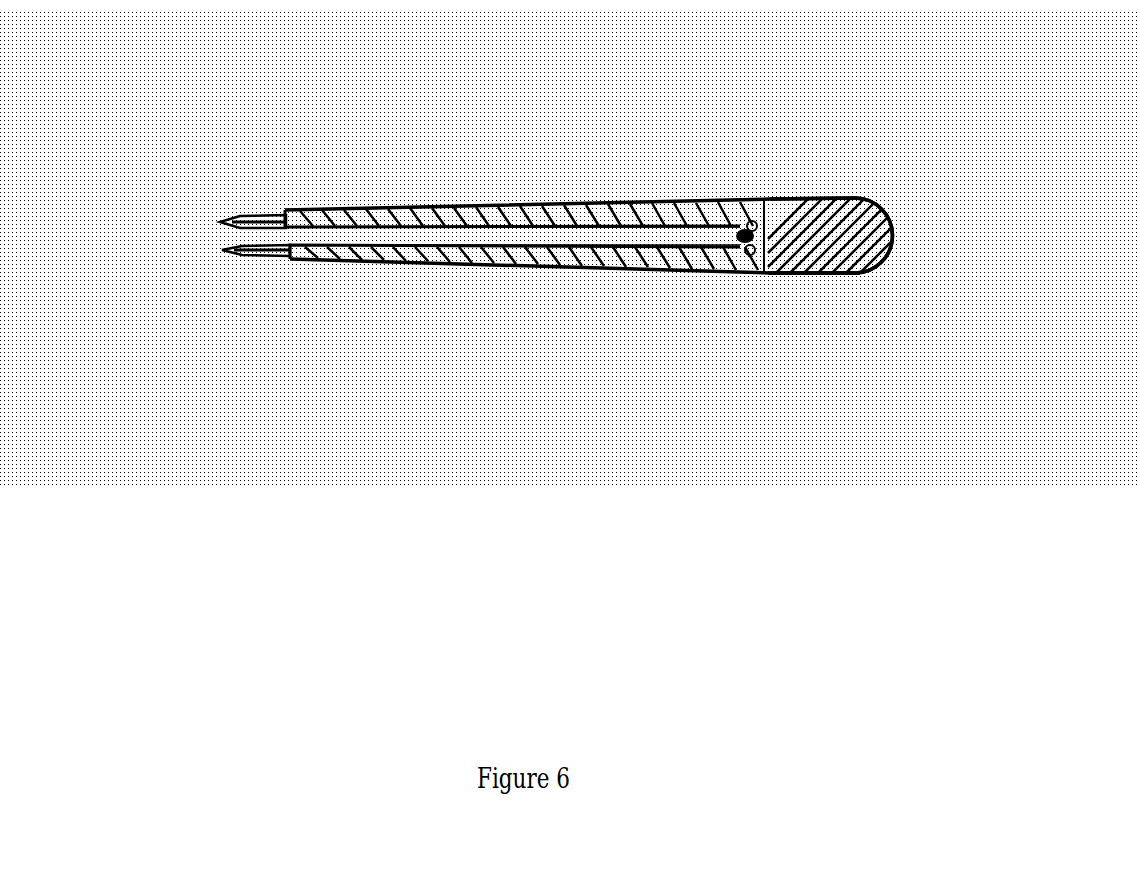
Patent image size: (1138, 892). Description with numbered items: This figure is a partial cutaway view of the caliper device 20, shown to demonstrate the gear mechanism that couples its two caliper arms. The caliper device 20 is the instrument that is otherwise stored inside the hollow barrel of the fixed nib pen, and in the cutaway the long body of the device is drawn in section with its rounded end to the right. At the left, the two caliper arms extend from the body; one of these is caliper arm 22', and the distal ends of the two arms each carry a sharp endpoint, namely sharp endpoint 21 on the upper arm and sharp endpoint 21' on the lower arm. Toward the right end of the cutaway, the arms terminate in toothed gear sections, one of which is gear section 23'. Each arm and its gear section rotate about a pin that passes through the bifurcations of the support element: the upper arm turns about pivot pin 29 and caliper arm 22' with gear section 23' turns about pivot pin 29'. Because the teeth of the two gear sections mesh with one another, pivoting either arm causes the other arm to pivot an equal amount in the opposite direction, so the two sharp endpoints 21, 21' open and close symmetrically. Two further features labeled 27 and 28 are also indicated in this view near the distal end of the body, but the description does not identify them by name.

The caliper device 20 is at (566, 190).
The sharp endpoint 21 is at (205, 186).
The sharp endpoint 21' is at (205, 299).
The caliper arm 22' is at (528, 259).
The gear section 23' is at (522, 252).
The distal end face 27 is at (787, 273).
The distal tip cap 28 is at (844, 184).
The pivot pin 29 is at (790, 166).
The pivot pin 29' is at (789, 325).